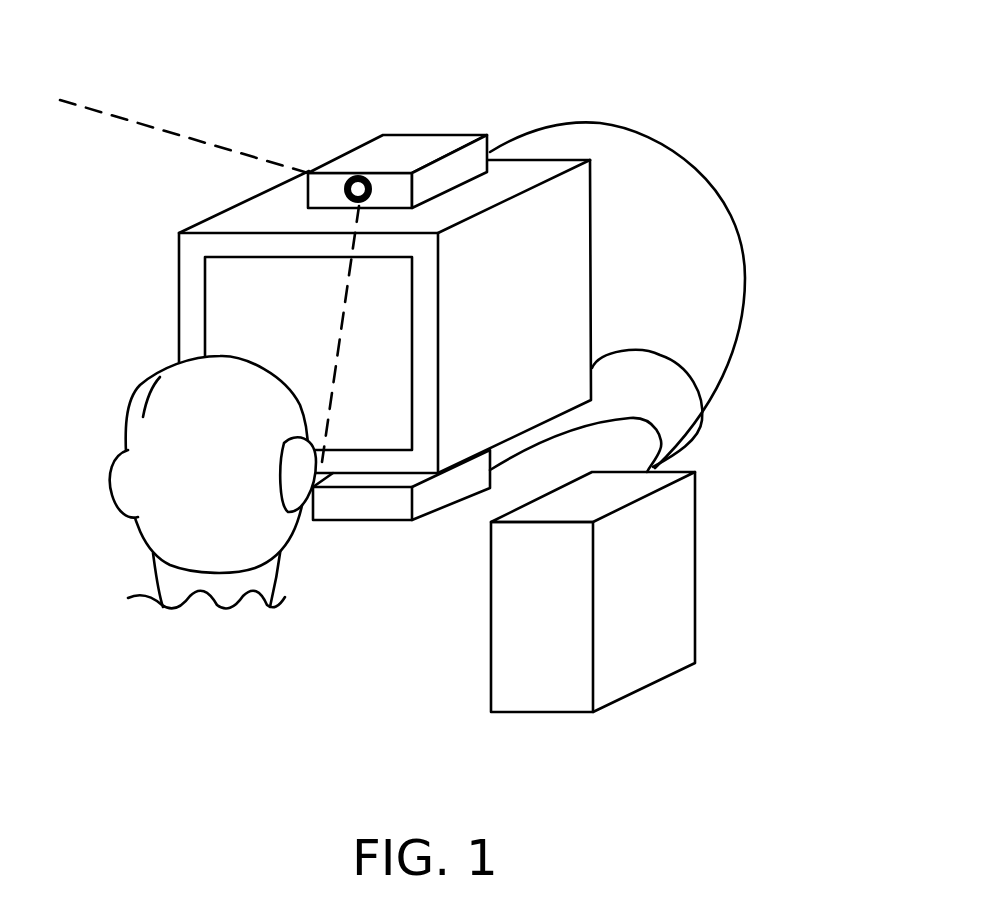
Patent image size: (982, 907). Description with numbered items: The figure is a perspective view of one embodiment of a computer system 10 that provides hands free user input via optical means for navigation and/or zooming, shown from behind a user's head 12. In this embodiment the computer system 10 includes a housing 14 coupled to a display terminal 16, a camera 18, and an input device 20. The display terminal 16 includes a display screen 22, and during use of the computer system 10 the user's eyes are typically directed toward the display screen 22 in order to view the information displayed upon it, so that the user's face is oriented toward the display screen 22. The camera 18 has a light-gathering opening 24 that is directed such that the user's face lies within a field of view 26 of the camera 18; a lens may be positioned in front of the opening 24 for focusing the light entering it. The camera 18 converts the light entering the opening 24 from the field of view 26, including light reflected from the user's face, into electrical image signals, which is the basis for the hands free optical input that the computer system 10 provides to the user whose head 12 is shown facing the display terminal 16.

The computer system 10 is at (622, 57).
The user's head 12 is at (137, 535).
The housing 14 is at (697, 567).
The display terminal 16 is at (595, 278).
The camera 18 is at (434, 134).
The input device 20 is at (360, 525).
The display screen 22 is at (205, 307).
The light-gathering opening 24 is at (357, 176).
The field of view 26 is at (108, 115).